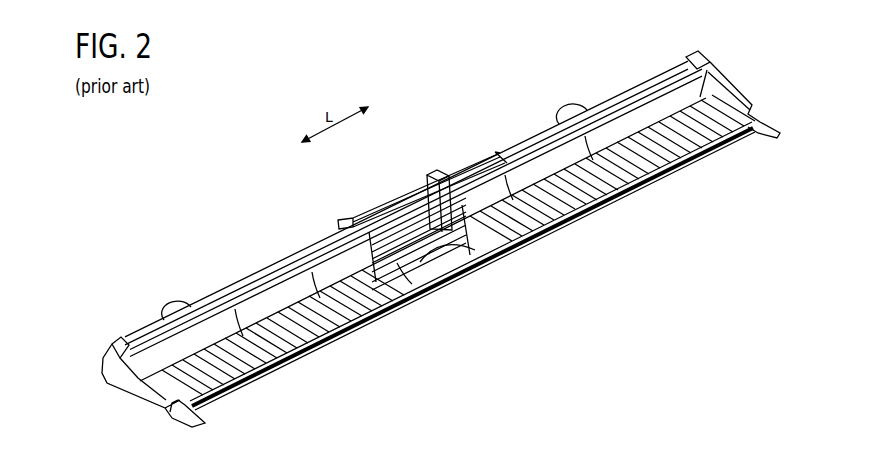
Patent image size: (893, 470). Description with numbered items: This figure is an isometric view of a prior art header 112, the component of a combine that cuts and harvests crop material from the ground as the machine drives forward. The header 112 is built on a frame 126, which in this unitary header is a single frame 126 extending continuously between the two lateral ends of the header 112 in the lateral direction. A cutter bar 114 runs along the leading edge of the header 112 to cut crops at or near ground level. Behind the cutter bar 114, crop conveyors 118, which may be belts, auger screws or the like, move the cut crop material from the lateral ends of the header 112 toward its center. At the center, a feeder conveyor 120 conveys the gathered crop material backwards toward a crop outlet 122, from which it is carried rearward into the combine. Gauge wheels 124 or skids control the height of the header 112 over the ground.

The header 112 is at (228, 184).
The cutter bar 114 is at (575, 223).
The crop conveyor 118 is at (273, 347).
The feeder conveyor 120 is at (462, 265).
The crop outlet 122 is at (422, 196).
The gauge wheel 124 is at (173, 309).
The frame 126 is at (333, 236).